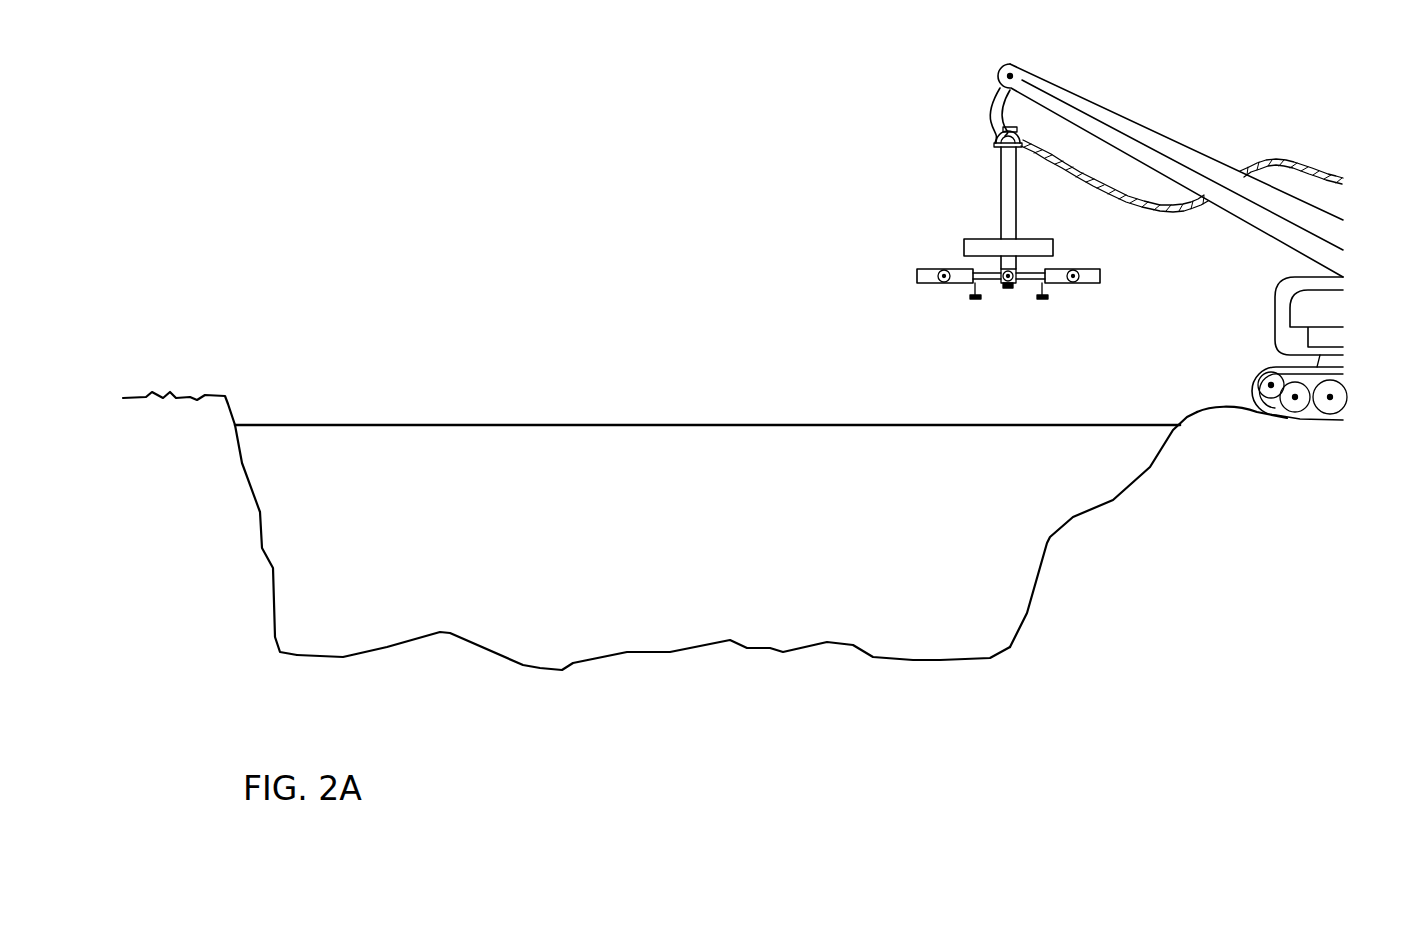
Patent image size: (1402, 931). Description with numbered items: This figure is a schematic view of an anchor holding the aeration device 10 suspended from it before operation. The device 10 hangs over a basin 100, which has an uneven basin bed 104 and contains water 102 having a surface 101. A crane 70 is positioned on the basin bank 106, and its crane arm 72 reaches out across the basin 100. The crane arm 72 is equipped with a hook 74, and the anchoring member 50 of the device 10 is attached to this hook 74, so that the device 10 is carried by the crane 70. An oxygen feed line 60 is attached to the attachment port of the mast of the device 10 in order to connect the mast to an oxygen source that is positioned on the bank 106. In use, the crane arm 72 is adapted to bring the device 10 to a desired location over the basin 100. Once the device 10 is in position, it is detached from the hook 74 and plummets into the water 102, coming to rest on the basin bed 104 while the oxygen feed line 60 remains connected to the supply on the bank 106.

The aeration device 10 is at (975, 213).
The anchoring member 50 is at (997, 147).
The oxygen feed line 60 is at (1293, 149).
The crane 70 is at (1216, 106).
The crane arm 72 is at (1088, 107).
The hook 74 is at (997, 103).
The basin 100 is at (514, 297).
The surface 101 is at (423, 421).
The water 102 is at (628, 455).
The basin bed 104 is at (575, 660).
The basin bank 106 is at (1197, 427).